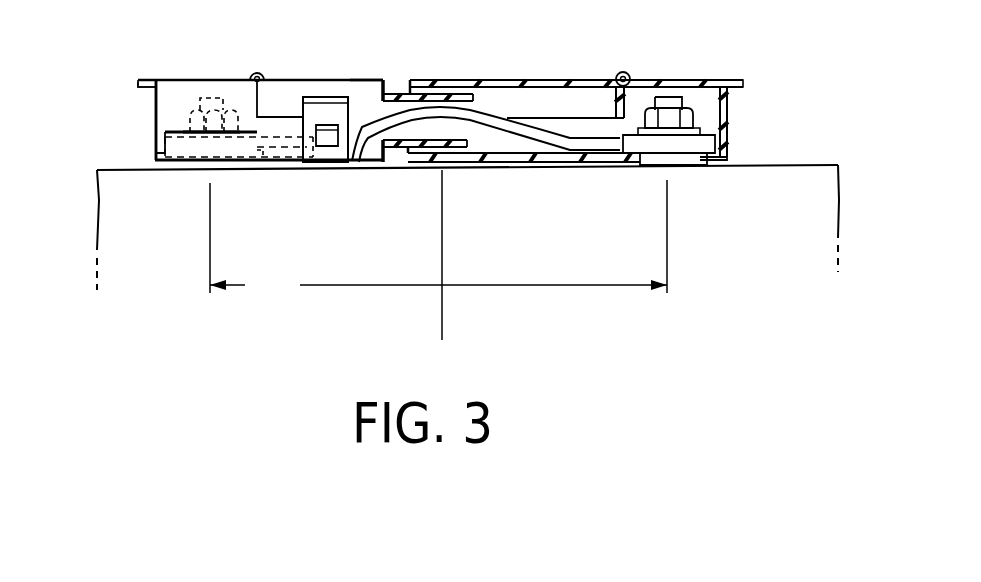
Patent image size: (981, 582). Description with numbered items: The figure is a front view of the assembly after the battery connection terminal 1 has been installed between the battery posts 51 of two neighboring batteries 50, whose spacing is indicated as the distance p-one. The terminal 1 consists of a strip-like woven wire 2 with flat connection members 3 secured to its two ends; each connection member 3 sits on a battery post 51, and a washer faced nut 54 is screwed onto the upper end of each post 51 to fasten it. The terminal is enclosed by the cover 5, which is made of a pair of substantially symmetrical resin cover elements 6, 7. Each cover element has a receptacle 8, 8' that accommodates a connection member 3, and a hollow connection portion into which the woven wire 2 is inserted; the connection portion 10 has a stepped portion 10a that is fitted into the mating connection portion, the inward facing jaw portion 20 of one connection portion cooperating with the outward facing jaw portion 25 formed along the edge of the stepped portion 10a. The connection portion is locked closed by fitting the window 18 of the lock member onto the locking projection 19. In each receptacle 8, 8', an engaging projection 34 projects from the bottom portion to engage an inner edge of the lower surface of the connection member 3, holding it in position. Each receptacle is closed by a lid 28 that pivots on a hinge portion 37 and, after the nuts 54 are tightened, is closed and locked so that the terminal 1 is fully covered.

The battery connection terminal 1 is at (533, 167).
The woven wire 2 is at (508, 125).
The connection member 3 is at (203, 162).
The cover 5 is at (483, 58).
The cover element 6 is at (592, 60).
The cover element 7 is at (369, 58).
The receptacle 8 is at (177, 83).
The receptacle 8' is at (751, 98).
The connection portion 10 is at (320, 78).
The stepped portion 10a is at (397, 92).
The window 18 is at (320, 162).
The locking projection 19 is at (330, 146).
The jaw portion 20 is at (405, 165).
The jaw portion 25 is at (475, 163).
The lid 28 is at (165, 90).
The engaging projection 34 is at (260, 157).
The hinge portion 37 is at (623, 72).
The battery 50 is at (257, 323).
The battery post 51 is at (215, 98).
The washer faced nut 54 is at (187, 127).